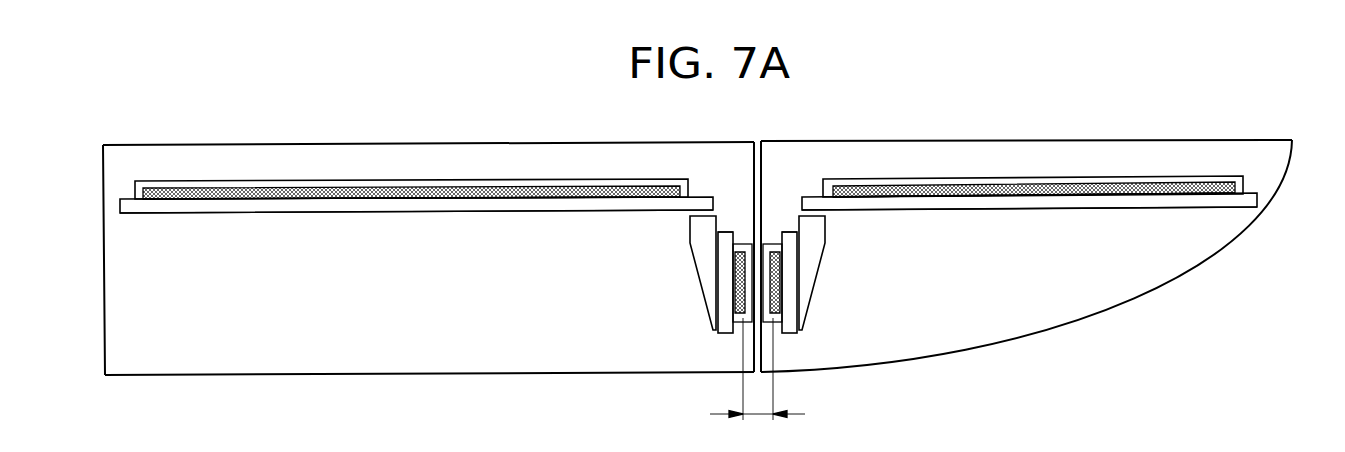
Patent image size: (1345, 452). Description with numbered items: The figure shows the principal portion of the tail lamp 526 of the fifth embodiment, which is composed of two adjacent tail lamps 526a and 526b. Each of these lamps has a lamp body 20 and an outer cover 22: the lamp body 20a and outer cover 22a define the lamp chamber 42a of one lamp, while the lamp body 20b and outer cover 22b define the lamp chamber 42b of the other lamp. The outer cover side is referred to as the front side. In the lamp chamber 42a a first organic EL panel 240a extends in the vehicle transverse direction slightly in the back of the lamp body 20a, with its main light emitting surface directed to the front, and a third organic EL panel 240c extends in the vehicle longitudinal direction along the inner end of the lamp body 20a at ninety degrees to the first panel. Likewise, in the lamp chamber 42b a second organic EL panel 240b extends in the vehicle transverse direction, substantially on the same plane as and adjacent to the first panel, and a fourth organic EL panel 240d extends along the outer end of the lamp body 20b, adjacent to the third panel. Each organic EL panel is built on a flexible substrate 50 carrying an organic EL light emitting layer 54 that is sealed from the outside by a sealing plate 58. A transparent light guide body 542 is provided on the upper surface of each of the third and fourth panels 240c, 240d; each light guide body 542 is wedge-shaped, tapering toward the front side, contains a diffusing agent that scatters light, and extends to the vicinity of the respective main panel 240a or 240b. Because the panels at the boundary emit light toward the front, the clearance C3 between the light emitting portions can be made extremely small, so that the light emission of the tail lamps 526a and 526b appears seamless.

The tail lamp 526 is at (709, 215).
The tail lamp 526a is at (1150, 123).
The tail lamp 526b is at (357, 132).
The lamp body 20 is at (697, 118).
The lamp body 20a is at (967, 142).
The lamp body 20b is at (555, 143).
The outer cover 22 is at (698, 284).
The outer cover 22a is at (1168, 288).
The outer cover 22b is at (232, 370).
The lamp chamber 42a is at (1033, 169).
The lamp chamber 42b is at (387, 173).
The flexible substrate 50 is at (505, 208).
The organic EL light emitting layer 54 is at (475, 198).
The sealing plate 58 is at (442, 186).
The first organic EL panel 240a is at (948, 210).
The second organic EL panel 240b is at (560, 211).
The third organic EL panel 240c is at (788, 232).
The fourth organic EL panel 240d is at (728, 232).
The light guide body 542 is at (697, 263).
The clearance C3 is at (757, 379).